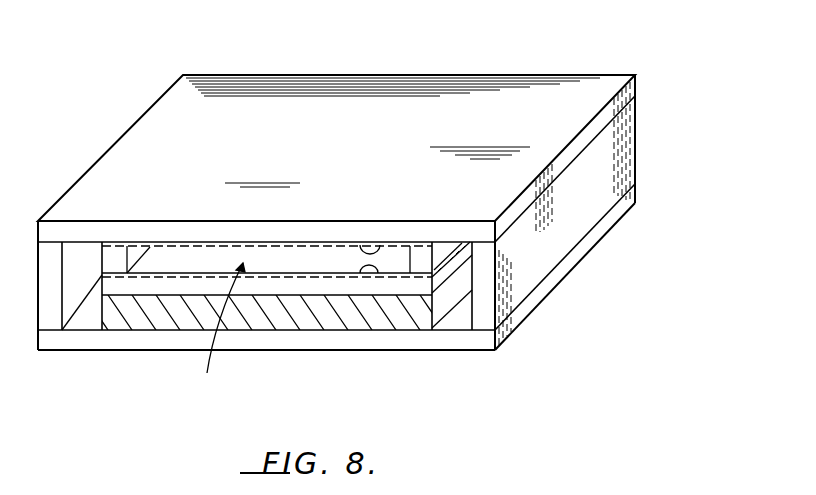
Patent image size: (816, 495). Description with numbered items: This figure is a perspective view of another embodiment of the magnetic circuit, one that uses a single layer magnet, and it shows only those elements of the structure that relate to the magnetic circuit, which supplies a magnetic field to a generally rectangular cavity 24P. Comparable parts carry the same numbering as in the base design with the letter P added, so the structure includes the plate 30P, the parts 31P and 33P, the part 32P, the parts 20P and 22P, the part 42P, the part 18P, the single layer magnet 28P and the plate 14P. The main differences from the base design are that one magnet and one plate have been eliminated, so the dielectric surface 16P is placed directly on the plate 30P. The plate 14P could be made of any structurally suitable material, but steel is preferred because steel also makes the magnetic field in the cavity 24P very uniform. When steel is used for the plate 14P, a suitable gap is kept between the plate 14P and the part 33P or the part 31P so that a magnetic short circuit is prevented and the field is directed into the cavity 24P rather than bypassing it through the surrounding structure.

The plate 30P is at (400, 100).
The magnetic circuit part 31P is at (48, 310).
The housing bottom wall 32P is at (600, 230).
The magnetic circuit part 33P is at (637, 150).
The left pole piece block 20P is at (115, 255).
The right pole piece block 22P is at (415, 257).
The dielectric surface 16P is at (378, 243).
The thin plates 42P is at (206, 260).
The plate layer 18P is at (380, 277).
The plate 14P is at (335, 288).
The permanent magnet 28P is at (165, 318).
The cavity 24P is at (215, 336).